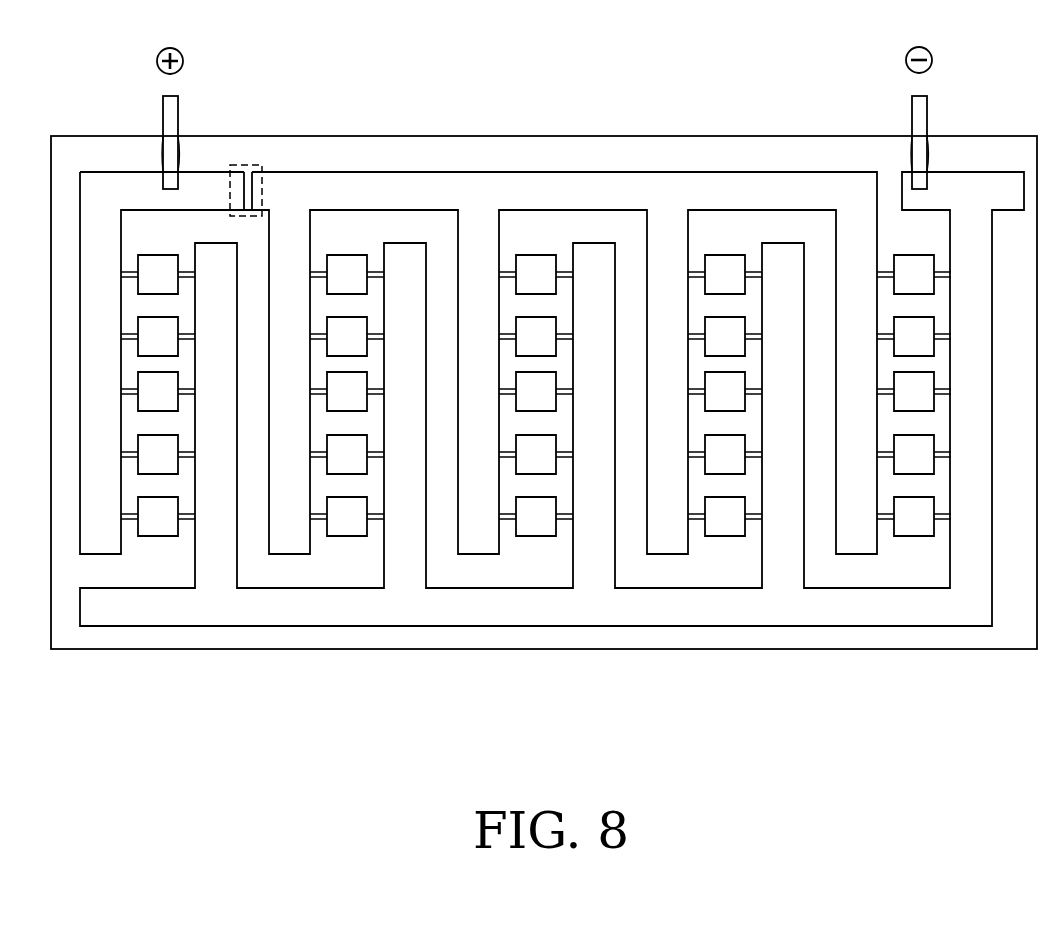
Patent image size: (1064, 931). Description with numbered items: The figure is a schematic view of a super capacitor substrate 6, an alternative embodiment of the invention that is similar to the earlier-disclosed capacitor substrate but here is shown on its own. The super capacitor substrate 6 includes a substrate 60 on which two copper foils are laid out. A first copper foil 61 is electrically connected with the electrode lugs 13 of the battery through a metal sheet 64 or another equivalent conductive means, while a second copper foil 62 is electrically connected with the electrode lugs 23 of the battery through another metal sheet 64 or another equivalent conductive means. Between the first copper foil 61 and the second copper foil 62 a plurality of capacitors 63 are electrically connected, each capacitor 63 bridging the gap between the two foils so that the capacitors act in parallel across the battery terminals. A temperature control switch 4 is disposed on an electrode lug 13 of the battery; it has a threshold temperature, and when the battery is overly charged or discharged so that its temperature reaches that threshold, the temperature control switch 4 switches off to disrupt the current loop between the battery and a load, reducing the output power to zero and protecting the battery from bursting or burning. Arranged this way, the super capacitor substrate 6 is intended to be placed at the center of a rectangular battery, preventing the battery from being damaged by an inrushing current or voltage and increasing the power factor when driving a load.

The super capacitor substrate 6 is at (523, 363).
The substrate 60 is at (483, 152).
The first copper foil 61 is at (587, 193).
The second copper foil 62 is at (350, 608).
The capacitor 63 is at (341, 265).
The metal sheet 64 is at (173, 113).
The electrode lug 13 is at (183, 52).
The electrode lug 23 is at (907, 49).
The temperature control switch 4 is at (247, 165).